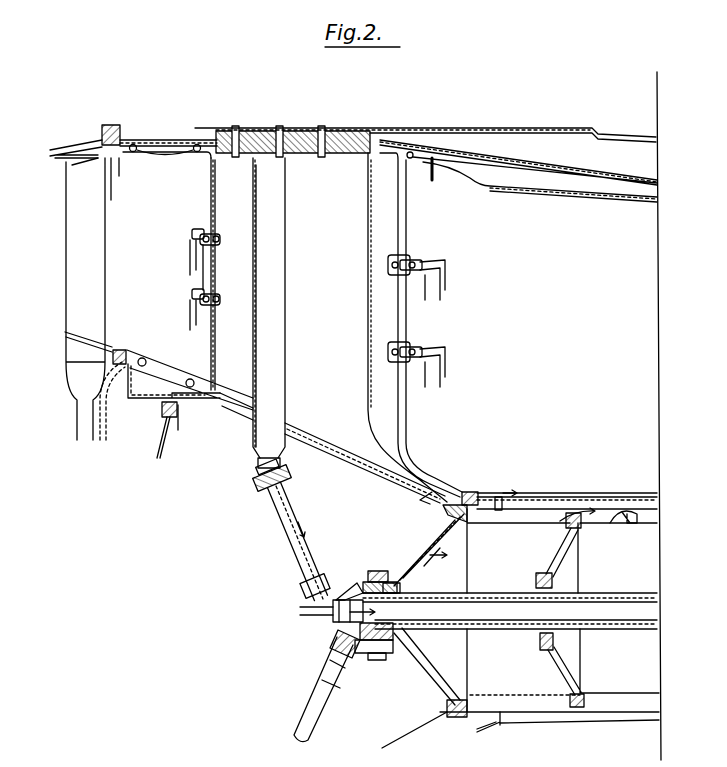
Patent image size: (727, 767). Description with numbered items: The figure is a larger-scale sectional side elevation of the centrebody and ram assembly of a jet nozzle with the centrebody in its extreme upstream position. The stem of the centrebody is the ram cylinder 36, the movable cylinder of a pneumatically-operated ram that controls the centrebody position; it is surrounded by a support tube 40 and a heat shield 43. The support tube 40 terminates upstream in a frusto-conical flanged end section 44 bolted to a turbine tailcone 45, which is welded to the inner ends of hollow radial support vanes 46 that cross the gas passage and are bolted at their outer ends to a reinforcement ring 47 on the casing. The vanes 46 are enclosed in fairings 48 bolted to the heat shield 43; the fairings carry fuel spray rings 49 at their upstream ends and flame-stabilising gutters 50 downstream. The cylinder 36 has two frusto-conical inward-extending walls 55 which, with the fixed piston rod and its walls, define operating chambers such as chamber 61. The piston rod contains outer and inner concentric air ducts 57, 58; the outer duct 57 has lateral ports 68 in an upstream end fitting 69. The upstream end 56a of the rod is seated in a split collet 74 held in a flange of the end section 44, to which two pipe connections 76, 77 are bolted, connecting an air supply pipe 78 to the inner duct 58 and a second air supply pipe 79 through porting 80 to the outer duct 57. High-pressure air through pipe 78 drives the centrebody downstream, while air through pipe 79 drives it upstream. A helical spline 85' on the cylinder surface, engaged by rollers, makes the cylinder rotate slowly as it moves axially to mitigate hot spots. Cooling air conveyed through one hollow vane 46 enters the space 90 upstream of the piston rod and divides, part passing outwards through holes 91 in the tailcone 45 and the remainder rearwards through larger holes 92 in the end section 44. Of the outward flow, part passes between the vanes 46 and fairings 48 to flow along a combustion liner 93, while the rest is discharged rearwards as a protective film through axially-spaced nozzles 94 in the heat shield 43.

The ram cylinder 36 is at (632, 526).
The support tube 40 is at (545, 506).
The heat shield 43 is at (618, 494).
The frusto-conical flanged end section 44 is at (448, 535).
The turbine tailcone 45 is at (348, 460).
The hollow radial support vanes 46 is at (370, 416).
The reinforcement ring 47 is at (313, 148).
The fairings 48 is at (209, 203).
The fuel spray rings 49 is at (192, 236).
The flame-stabilising gutters 50 is at (432, 268).
The inward-extending walls 55 is at (565, 551).
The upstream end of piston rod 56a is at (405, 629).
The outer air duct 57 is at (530, 597).
The inner air duct 58 is at (508, 612).
The operating chamber 61 is at (645, 559).
The lateral ports 68 is at (370, 580).
The upstream end fitting 69 is at (388, 658).
The split collet 74 is at (398, 590).
The pipe connection 76 is at (327, 613).
The pipe connection 77 is at (358, 585).
The air supply pipe 78 is at (292, 532).
The second air supply pipe 79 is at (307, 708).
The porting 80 is at (364, 655).
The helical spline 85' is at (636, 494).
The space 90 is at (406, 730).
The holes 91 is at (419, 502).
The larger holes 92 is at (428, 549).
The combustion liner 93 is at (613, 197).
The axially-spaced nozzles 94 is at (500, 494).